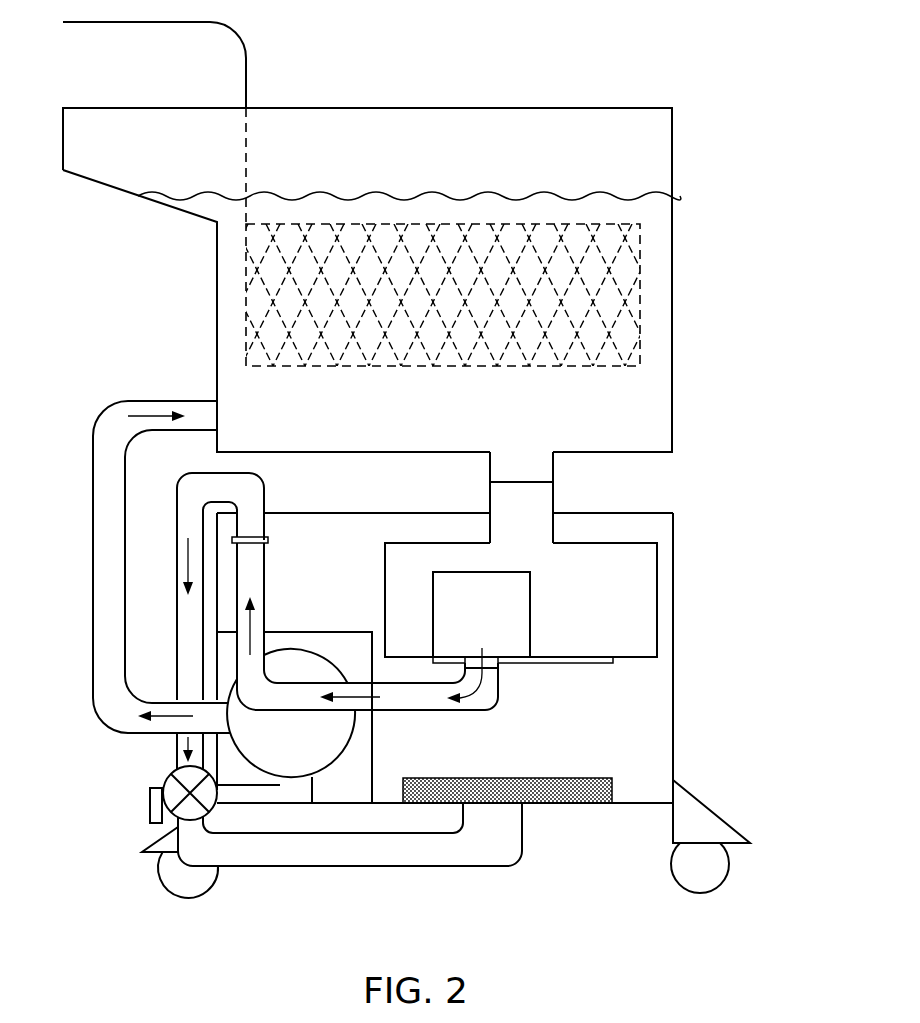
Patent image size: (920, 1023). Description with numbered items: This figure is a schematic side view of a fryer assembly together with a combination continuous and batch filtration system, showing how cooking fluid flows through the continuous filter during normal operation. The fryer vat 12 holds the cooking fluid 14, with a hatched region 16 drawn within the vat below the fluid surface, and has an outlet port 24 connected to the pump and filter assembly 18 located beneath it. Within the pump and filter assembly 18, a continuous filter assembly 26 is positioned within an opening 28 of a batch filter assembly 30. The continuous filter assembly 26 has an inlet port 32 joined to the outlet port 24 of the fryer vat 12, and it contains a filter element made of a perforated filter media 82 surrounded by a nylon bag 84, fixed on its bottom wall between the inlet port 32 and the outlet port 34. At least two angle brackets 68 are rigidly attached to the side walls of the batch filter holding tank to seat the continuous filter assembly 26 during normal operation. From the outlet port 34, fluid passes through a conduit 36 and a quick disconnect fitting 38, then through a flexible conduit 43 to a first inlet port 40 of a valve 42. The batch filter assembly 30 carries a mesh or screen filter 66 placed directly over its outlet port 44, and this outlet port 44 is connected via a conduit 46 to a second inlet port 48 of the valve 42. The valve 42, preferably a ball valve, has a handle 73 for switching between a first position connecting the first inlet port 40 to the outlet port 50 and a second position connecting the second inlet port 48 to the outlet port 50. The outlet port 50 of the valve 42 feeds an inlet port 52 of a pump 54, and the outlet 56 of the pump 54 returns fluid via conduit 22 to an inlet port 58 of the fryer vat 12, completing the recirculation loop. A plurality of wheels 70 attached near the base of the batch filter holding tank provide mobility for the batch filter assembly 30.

The fryer vat 12 is at (673, 323).
The cooking fluid 14 is at (663, 242).
The parts basket / load 16 is at (432, 223).
The pump and filter assembly 18 is at (748, 500).
The conduit 22 is at (97, 598).
The outlet port 24 is at (555, 465).
The continuous filter assembly 26 is at (657, 580).
The opening 28 is at (447, 498).
The batch filter assembly 30 is at (667, 722).
The inlet port 32 is at (555, 493).
The outlet port 34 is at (487, 658).
The conduit 36 is at (260, 577).
The quick disconnect fitting 38 is at (270, 540).
The first inlet port 40 is at (203, 763).
The valve 42 is at (160, 782).
The flexible conduit 43 is at (255, 510).
The outlet port 44 is at (493, 805).
The conduit 46 is at (383, 858).
The second inlet port 48 is at (192, 823).
The outlet port 50 is at (223, 805).
The inlet port 52 is at (293, 773).
The pump 54 is at (333, 748).
The outlet 56 is at (227, 692).
The inlet port 58 is at (213, 413).
The mesh or screen filter 66 is at (600, 803).
The angle brackets 68 is at (598, 665).
The wheels 70 is at (177, 887).
The handle 73 is at (150, 807).
The perforated filter media 82 is at (537, 614).
The nylon bag 84 is at (530, 577).